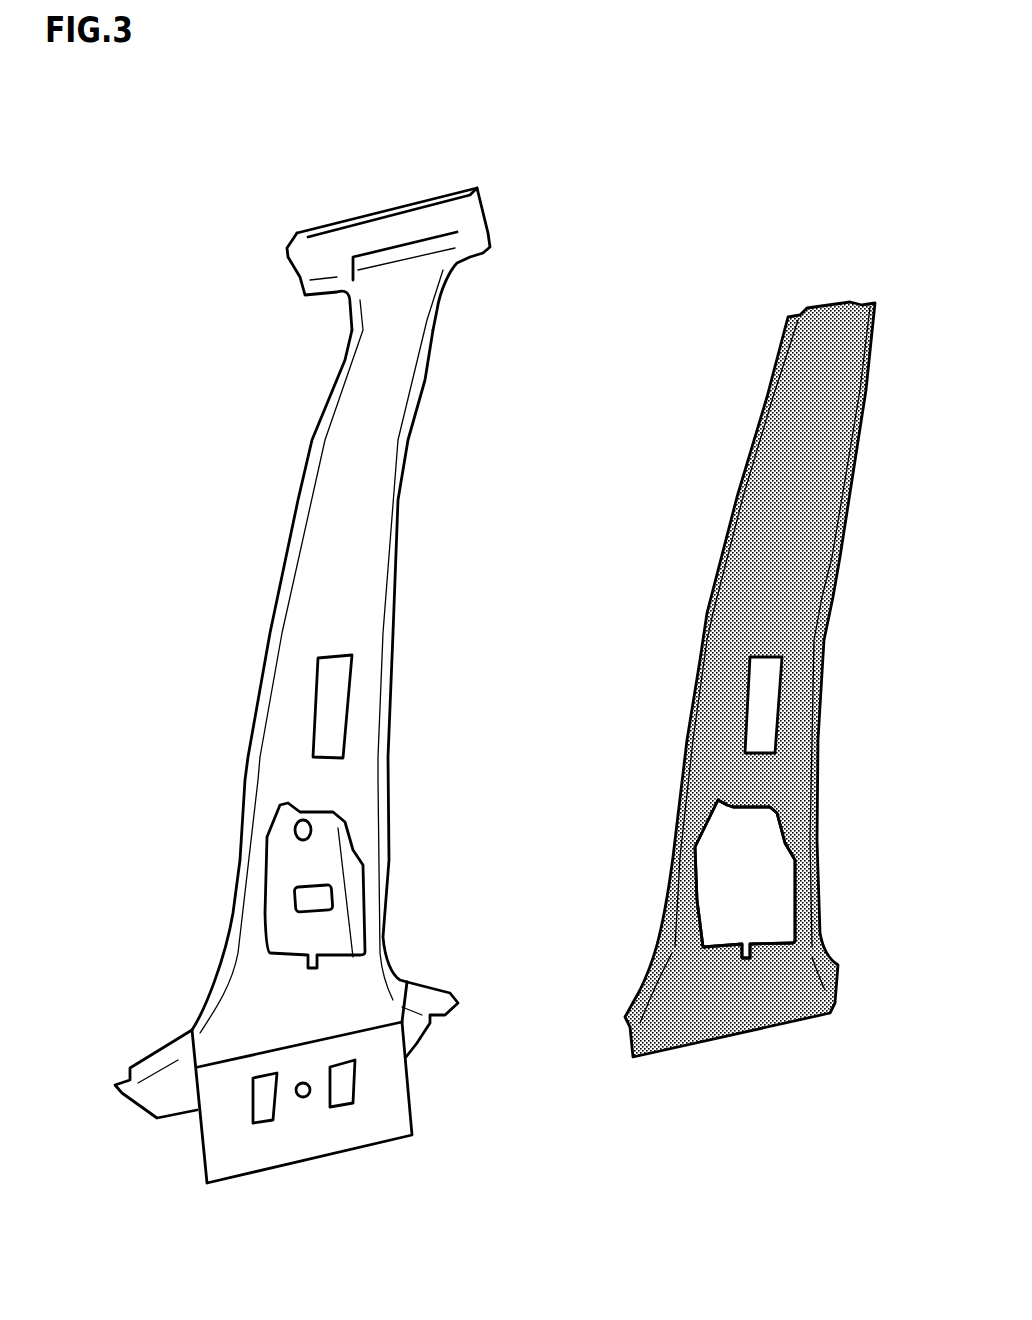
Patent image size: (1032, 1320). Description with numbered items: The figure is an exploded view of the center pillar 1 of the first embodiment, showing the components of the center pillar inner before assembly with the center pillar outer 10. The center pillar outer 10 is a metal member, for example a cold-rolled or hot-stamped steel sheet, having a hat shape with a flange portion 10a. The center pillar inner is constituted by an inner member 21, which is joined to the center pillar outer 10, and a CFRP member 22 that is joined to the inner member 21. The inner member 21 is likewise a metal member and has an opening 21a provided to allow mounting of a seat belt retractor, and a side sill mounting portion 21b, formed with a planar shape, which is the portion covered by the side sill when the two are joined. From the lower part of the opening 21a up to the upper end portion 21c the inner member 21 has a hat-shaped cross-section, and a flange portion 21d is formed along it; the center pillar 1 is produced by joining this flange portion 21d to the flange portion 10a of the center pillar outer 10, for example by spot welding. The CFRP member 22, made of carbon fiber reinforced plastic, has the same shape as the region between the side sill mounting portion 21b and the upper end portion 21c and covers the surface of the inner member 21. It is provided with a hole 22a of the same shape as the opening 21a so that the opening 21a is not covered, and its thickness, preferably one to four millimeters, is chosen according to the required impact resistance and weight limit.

The center pillar 1 is at (684, 165).
The center pillar outer 10 is at (322, 223).
The flange portion 10a is at (160, 1058).
The inner member 21 is at (370, 538).
The opening 21a is at (268, 866).
The side sill mounting portion 21b is at (328, 1137).
The upper end portion 21c is at (408, 288).
The flange portion 21d is at (270, 628).
The CFRP member 22 is at (805, 497).
The hole 22a is at (712, 877).